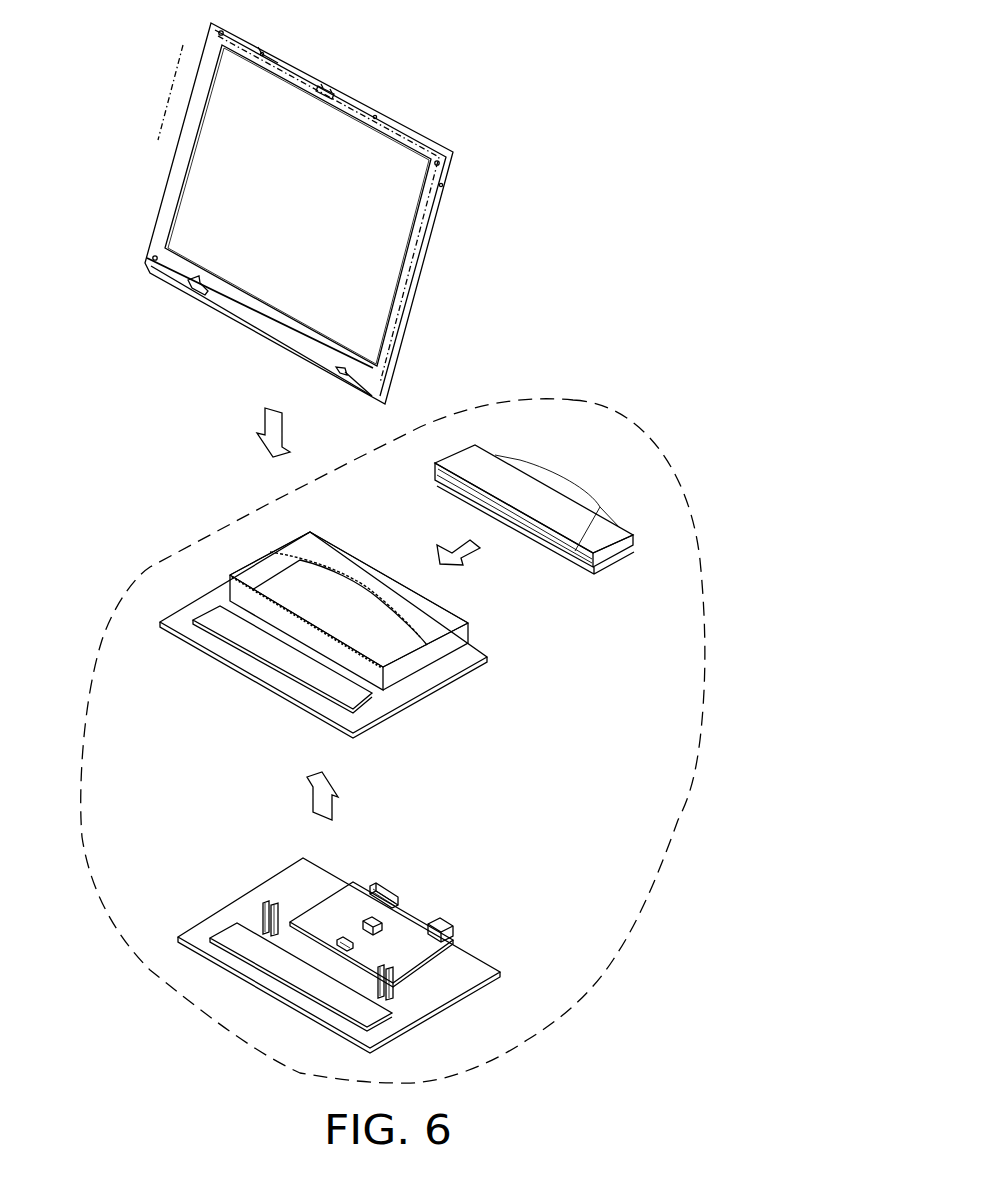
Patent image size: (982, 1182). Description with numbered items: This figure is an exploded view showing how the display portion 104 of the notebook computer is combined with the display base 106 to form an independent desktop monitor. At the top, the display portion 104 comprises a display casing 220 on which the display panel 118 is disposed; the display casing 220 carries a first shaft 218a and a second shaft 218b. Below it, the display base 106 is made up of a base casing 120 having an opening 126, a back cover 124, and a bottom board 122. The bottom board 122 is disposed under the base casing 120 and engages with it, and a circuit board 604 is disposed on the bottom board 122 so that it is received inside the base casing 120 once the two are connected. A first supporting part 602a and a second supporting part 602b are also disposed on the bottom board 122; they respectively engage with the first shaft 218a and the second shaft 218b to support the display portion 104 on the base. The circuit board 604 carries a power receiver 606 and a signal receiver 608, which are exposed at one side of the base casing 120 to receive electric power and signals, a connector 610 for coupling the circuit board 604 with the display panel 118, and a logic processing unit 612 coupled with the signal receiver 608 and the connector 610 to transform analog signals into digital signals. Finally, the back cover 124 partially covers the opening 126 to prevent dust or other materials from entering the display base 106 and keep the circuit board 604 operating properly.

The display portion 104 is at (172, 131).
The display panel 118 is at (373, 150).
The display casing 220 is at (328, 91).
The first shaft 218a is at (196, 291).
The second shaft 218b is at (337, 370).
The display base 106 is at (583, 403).
The back cover 124 is at (485, 467).
The base casing 120 is at (445, 650).
The opening 126 is at (288, 590).
The bottom board 122 is at (478, 975).
The circuit board 604 is at (417, 953).
The first supporting part 602a is at (263, 918).
The second supporting part 602b is at (395, 978).
The signal receiver 608 is at (398, 893).
The power receiver 606 is at (453, 928).
The logic processing unit 612 is at (363, 920).
The connector 610 is at (340, 945).